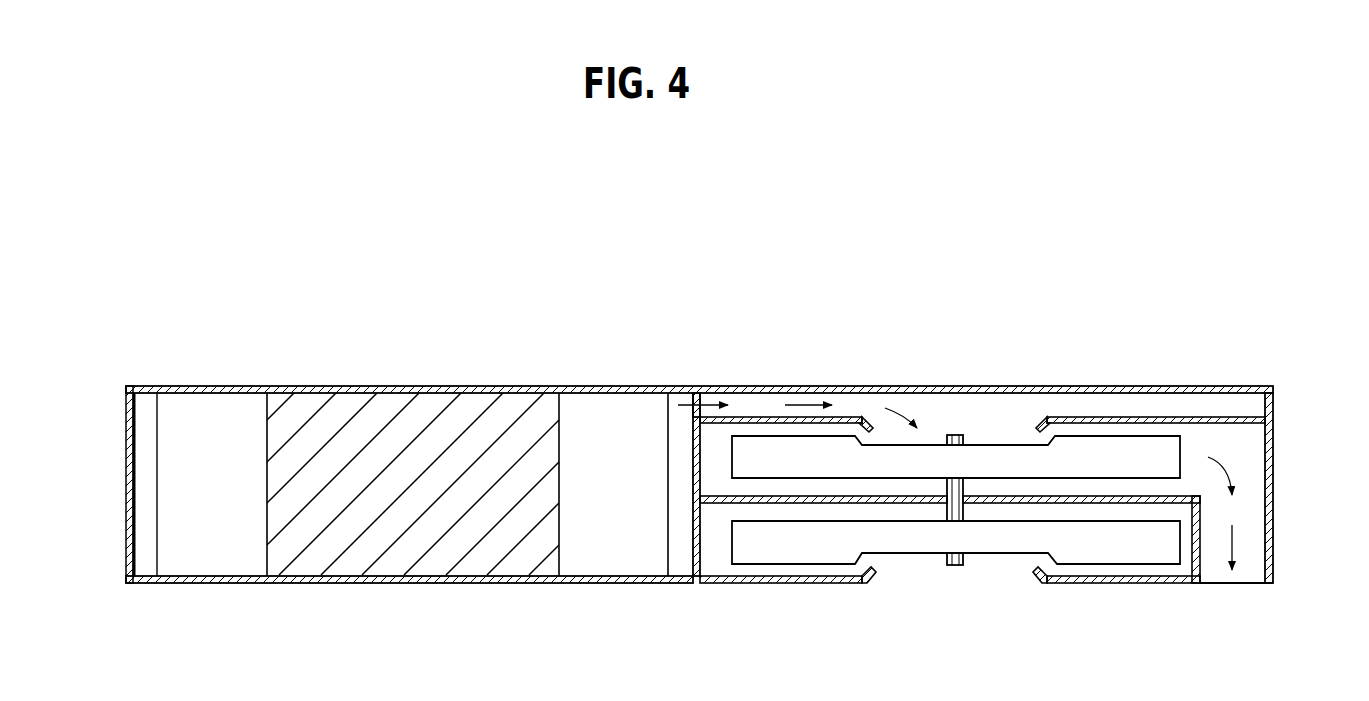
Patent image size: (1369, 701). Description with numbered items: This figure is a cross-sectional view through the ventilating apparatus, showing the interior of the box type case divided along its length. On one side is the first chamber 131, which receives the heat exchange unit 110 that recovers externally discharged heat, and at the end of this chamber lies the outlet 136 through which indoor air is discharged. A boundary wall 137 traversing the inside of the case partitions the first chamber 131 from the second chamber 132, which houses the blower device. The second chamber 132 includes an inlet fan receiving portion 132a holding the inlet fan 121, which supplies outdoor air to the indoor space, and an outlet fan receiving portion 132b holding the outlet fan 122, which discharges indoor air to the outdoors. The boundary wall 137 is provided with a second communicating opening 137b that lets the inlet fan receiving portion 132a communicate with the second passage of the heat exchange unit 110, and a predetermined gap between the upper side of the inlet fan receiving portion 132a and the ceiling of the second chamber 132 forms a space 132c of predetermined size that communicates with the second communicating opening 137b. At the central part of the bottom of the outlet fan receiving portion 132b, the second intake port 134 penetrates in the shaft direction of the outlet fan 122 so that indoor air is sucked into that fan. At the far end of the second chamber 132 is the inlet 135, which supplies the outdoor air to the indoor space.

The heat exchange unit 110 is at (438, 405).
The inlet fan 121 is at (1118, 448).
The outlet fan 122 is at (1122, 555).
The first chamber 131 is at (150, 405).
The second chamber 132 is at (1256, 458).
The inlet fan receiving portion 132a is at (712, 457).
The outlet fan receiving portion 132b is at (715, 555).
The space 132c is at (762, 405).
The second intake port 134 is at (983, 575).
The inlet 135 is at (1248, 572).
The outlet 136 is at (130, 478).
The boundary wall 137 is at (695, 525).
The second communicating opening 137b is at (700, 398).